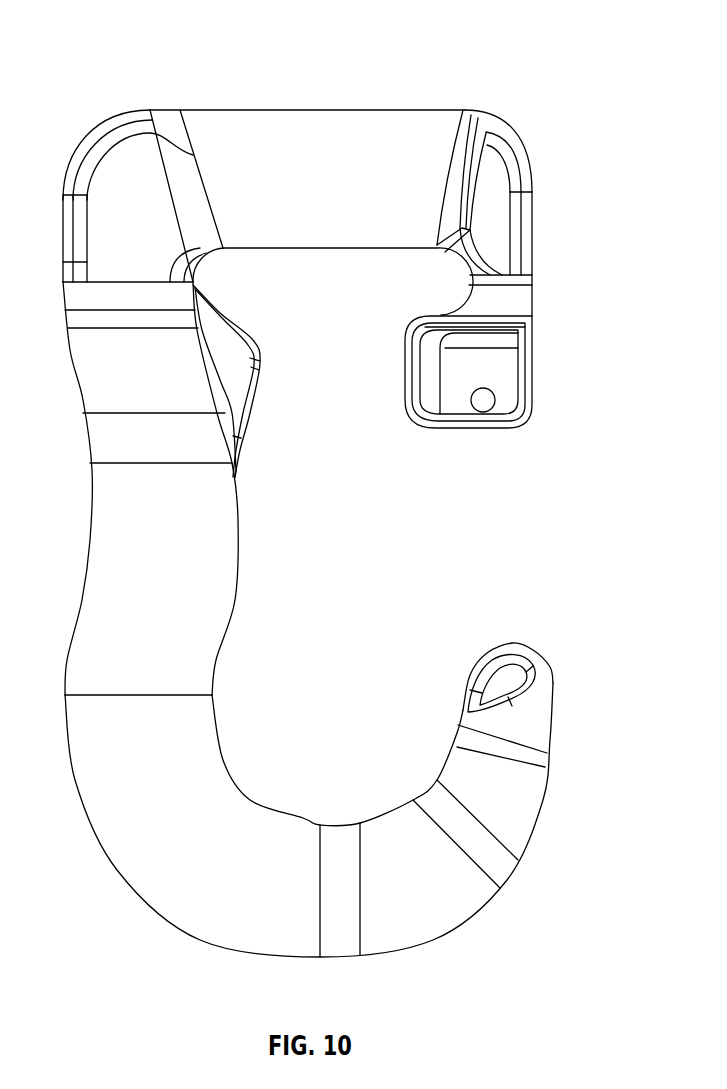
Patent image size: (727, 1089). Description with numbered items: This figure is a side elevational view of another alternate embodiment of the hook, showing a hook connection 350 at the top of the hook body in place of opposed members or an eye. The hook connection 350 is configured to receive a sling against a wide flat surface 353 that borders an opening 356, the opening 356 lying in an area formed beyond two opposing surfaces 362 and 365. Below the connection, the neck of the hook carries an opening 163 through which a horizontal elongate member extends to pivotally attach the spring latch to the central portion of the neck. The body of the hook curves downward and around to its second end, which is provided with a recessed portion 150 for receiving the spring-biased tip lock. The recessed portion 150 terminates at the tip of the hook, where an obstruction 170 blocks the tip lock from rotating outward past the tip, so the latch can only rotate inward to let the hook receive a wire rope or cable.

The hook connection 350 is at (550, 42).
The wide flat surface 353 is at (325, 249).
The opening 356 is at (392, 292).
The opposing surface 362 is at (262, 362).
The opposing surface 365 is at (404, 368).
The opening 163 is at (485, 400).
The recessed portion 150 is at (500, 670).
The obstruction 170 is at (530, 687).